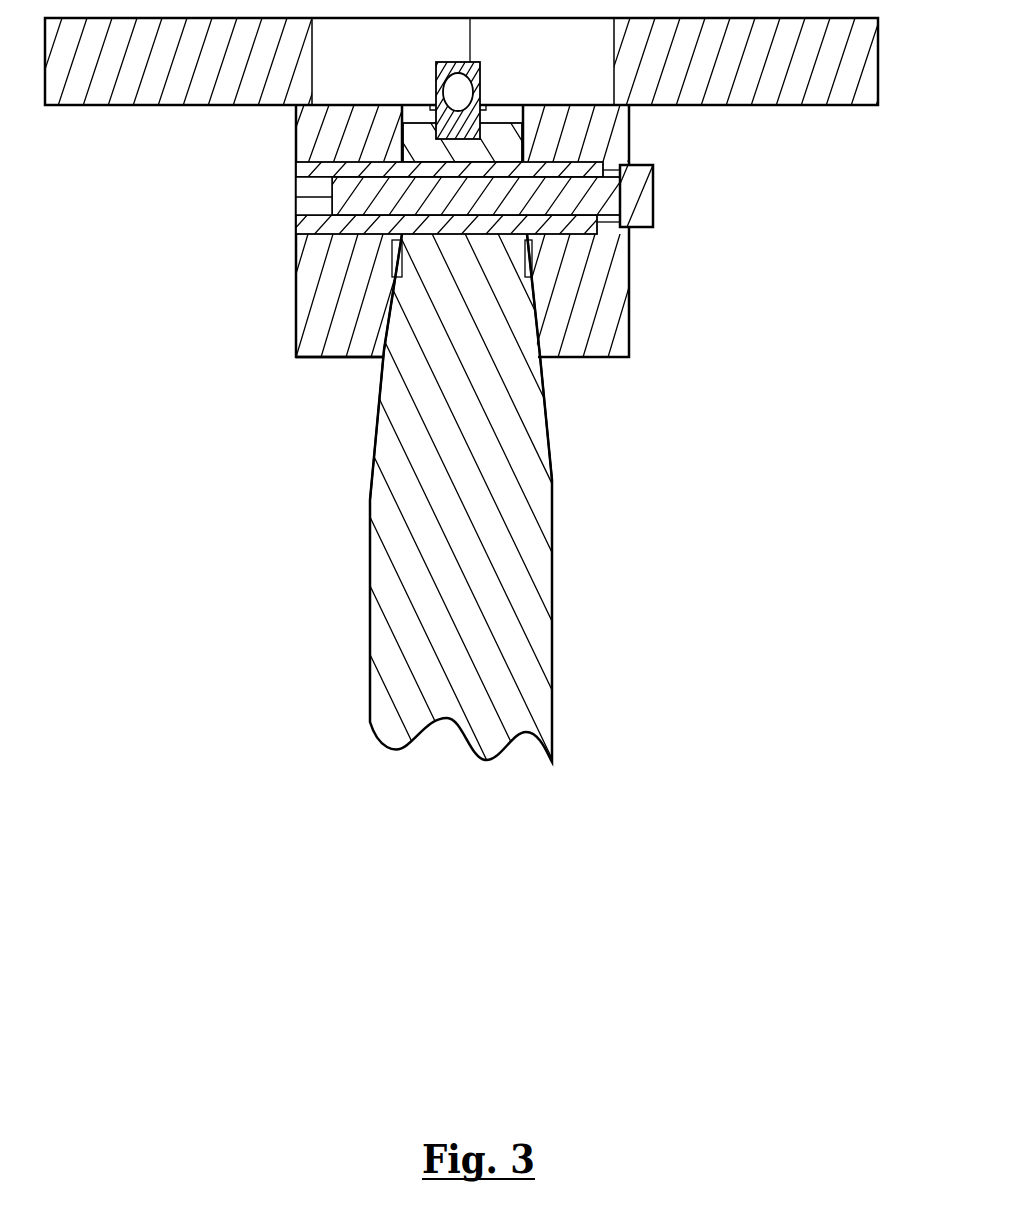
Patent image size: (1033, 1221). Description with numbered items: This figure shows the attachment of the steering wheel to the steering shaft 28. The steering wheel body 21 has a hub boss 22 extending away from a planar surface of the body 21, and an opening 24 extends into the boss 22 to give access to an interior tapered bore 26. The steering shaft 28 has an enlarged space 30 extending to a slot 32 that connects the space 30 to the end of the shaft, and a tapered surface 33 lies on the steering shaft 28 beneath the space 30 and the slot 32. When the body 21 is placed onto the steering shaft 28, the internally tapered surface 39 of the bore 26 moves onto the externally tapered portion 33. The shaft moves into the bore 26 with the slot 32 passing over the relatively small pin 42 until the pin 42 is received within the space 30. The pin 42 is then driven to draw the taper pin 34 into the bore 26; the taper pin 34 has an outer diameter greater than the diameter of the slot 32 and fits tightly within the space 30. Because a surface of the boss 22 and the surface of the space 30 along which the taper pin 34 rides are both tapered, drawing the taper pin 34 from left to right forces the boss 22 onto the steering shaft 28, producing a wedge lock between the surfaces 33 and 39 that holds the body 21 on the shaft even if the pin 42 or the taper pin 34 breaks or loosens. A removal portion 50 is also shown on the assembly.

The body 21 is at (118, 95).
The hub boss 22 is at (618, 338).
The opening 24 is at (353, 236).
The interior tapered bore 26 is at (400, 352).
The steering shaft 28 is at (378, 504).
The enlarged space 30 is at (466, 236).
The slot 32 is at (512, 157).
The tapered surface 33 is at (538, 362).
The taper pin 34 is at (296, 226).
The internally tapered surface 39 is at (538, 336).
The pin 42 is at (638, 196).
The removal portion 50 is at (438, 68).